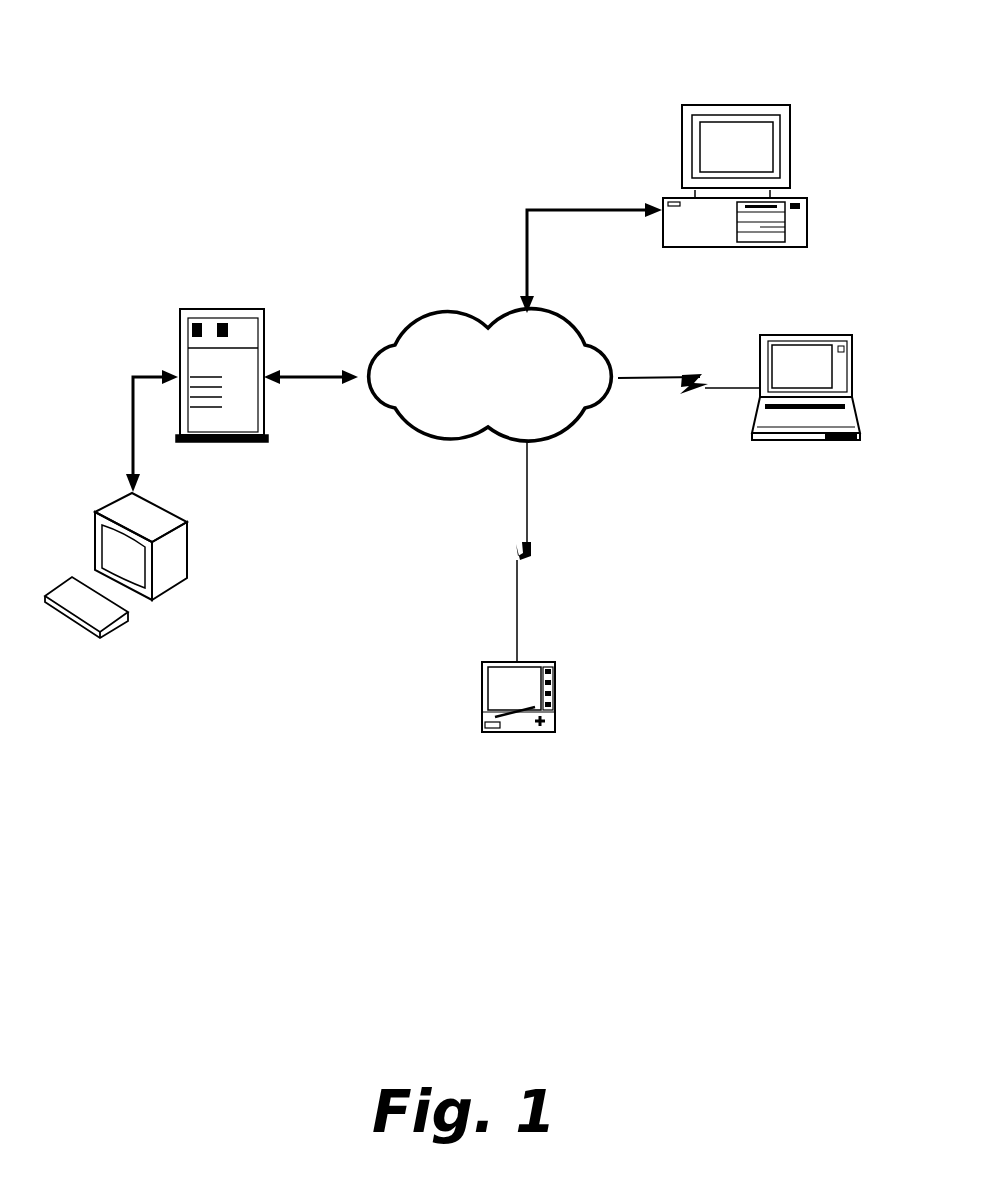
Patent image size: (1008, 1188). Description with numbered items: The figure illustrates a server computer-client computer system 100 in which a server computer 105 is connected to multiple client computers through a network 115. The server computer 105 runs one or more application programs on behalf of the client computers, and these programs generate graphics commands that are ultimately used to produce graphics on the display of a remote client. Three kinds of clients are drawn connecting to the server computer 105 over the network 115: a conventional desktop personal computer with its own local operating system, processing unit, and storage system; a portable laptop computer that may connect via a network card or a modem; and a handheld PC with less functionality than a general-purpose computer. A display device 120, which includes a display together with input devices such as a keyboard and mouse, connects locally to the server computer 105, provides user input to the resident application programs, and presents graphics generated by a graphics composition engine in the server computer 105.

The server computer-client computer system 100 is at (498, 30).
The server computer 105 is at (222, 309).
The network 115 is at (490, 375).
The display device 120 is at (187, 548).